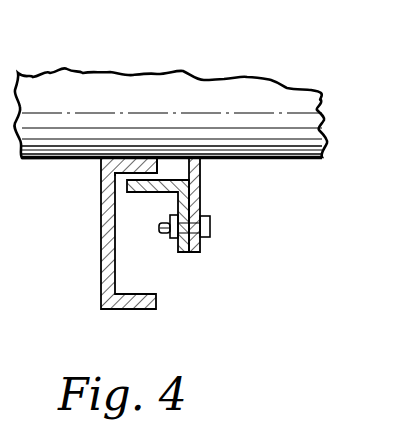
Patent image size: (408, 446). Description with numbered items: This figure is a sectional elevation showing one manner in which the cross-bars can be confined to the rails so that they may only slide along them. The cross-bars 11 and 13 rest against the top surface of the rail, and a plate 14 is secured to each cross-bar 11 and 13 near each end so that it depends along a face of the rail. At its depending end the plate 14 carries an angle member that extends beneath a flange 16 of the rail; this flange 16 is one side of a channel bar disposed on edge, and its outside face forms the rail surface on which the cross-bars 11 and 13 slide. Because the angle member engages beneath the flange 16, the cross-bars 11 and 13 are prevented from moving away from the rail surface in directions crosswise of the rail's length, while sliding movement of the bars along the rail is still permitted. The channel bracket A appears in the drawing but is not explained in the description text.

The cross-bar 11 is at (237, 95).
The cross-bar 13 is at (148, 192).
The plate 14 is at (200, 184).
The flange 16 is at (128, 157).
The channel bracket A is at (101, 268).